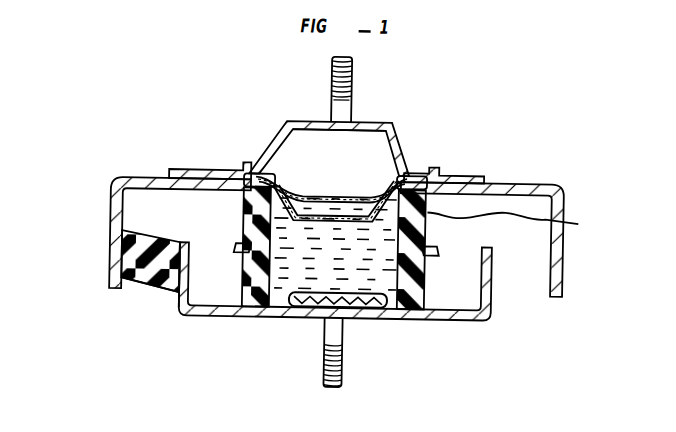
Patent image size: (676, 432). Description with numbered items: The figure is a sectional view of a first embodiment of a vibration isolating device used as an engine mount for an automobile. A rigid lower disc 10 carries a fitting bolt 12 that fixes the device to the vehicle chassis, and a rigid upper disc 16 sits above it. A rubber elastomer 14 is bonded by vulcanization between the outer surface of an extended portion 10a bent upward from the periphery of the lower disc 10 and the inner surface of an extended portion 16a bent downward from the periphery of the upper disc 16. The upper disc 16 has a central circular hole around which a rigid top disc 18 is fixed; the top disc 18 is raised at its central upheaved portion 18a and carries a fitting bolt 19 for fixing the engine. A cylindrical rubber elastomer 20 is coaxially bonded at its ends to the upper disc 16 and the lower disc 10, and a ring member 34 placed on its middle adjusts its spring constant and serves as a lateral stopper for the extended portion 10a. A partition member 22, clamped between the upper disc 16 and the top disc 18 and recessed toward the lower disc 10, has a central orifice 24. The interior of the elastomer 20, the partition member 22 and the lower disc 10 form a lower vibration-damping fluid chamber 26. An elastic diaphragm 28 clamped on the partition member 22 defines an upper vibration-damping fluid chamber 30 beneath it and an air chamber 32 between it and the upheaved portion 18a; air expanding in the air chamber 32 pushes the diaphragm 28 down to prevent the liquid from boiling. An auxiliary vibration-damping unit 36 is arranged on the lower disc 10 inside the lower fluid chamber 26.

The lower disc 10 is at (421, 318).
The extended portion 10a is at (176, 298).
The fitting bolt 12 is at (346, 368).
The rubber elastomer 14 is at (132, 282).
The upper disc 16 is at (531, 184).
The extended portion 16a is at (120, 258).
The top disc 18 is at (429, 172).
The upheaved portion 18a is at (395, 150).
The fitting bolt 19 is at (349, 84).
The cylindrical rubber elastomer 20 is at (258, 305).
The partition member 22 is at (304, 186).
The orifice 24 is at (328, 195).
The lower vibration-damping fluid chamber 26 is at (298, 268).
The elastic diaphragm 28 is at (390, 172).
The upper vibration-damping fluid chamber 30 is at (513, 223).
The air chamber 32 is at (347, 148).
The ring member 34 is at (242, 258).
The auxiliary vibration-damping unit 36 is at (383, 300).